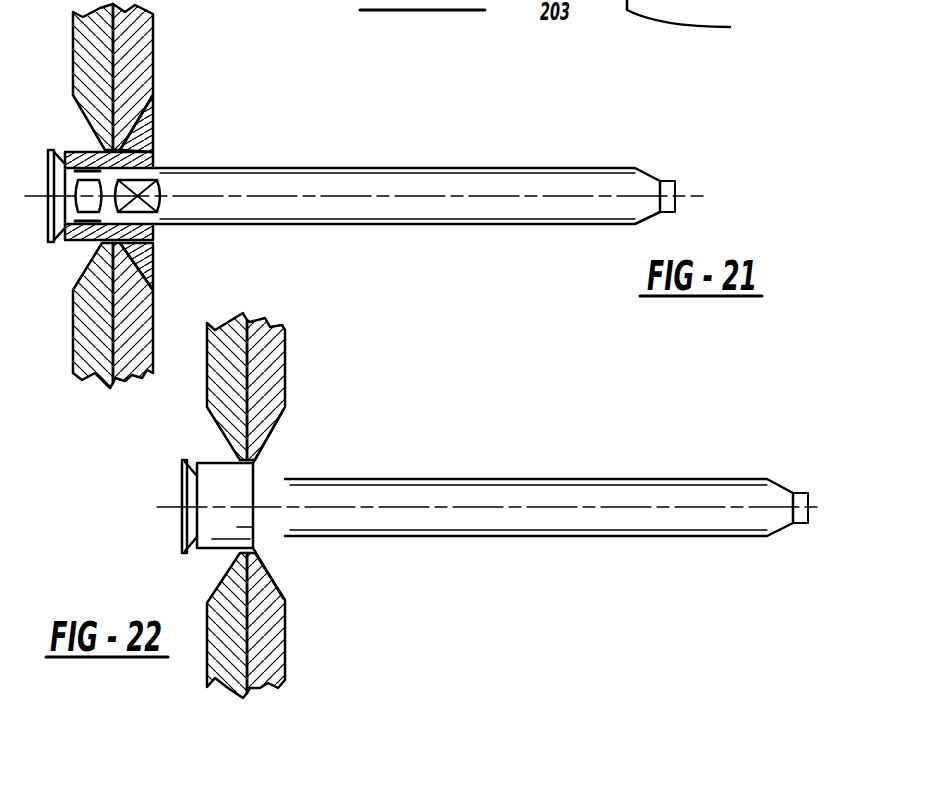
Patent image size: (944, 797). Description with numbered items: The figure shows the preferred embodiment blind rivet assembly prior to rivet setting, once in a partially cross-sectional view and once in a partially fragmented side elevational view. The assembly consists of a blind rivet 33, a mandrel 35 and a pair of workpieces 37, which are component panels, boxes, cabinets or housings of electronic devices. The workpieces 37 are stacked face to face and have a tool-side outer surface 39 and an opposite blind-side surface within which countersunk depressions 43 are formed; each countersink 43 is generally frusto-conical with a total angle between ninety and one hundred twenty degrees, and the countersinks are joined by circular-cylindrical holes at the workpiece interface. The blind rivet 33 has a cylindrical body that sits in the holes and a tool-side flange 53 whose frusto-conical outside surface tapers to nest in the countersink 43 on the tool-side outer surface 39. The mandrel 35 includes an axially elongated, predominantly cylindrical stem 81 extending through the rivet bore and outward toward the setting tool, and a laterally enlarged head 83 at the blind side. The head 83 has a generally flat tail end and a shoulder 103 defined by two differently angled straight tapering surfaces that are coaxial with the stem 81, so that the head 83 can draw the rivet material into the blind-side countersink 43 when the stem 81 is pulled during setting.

In FIG. 21, the mandrel 35 is at (392, 200).
In FIG. 22, the mandrel 35 is at (487, 505).
In FIG. 21, the workpieces 37 is at (92, 62).
In FIG. 22, the workpieces 37 is at (225, 352).
In FIG. 22, the tool-side outer surface 39 is at (287, 362).
In FIG. 21, the blind rivet 33 is at (87, 160).
In FIG. 22, the blind rivet 33 is at (277, 470).
In FIG. 21, the tool-side flange 53 is at (143, 145).
In FIG. 21, the countersunk depression 43 is at (138, 270).
In FIG. 21, the mandrel head 83 is at (48, 216).
In FIG. 21, the shoulder 103 is at (62, 218).
In FIG. 21, the stem 81 is at (512, 177).
In FIG. 22, the stem 81 is at (430, 495).